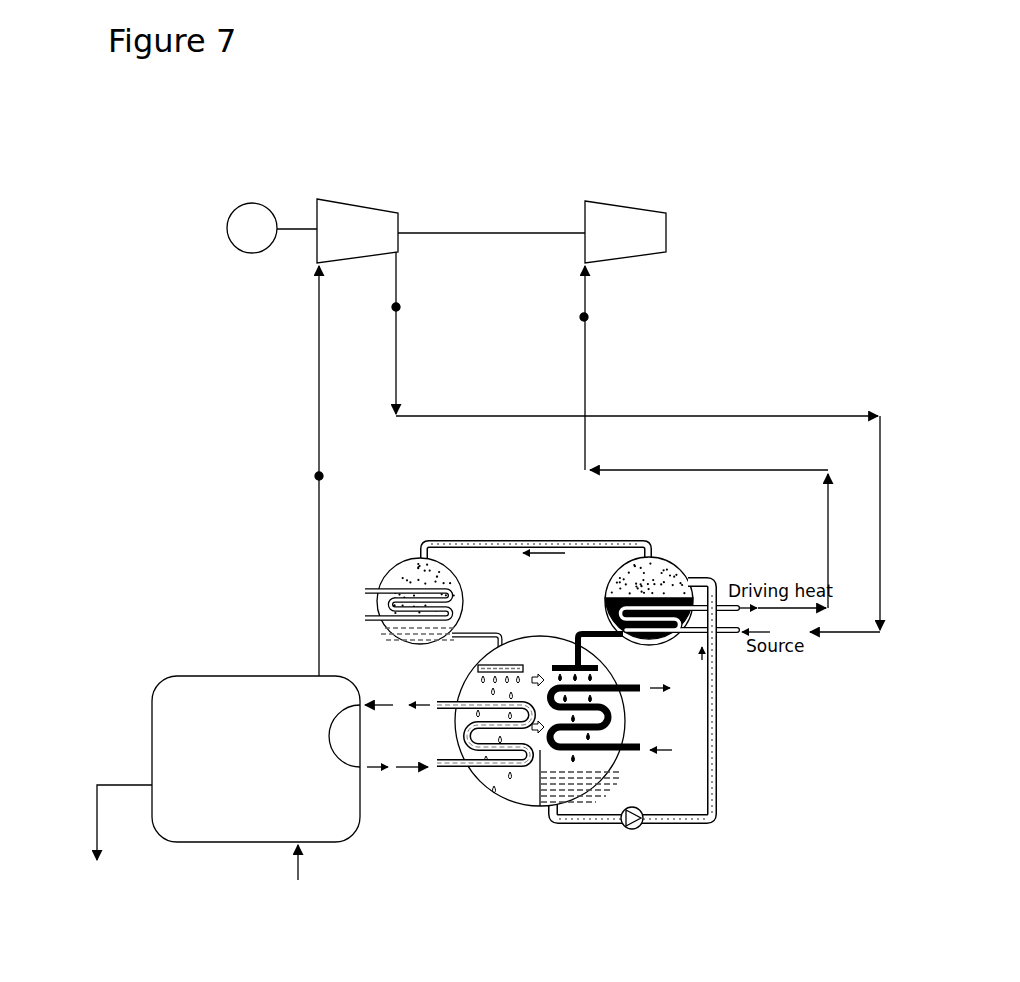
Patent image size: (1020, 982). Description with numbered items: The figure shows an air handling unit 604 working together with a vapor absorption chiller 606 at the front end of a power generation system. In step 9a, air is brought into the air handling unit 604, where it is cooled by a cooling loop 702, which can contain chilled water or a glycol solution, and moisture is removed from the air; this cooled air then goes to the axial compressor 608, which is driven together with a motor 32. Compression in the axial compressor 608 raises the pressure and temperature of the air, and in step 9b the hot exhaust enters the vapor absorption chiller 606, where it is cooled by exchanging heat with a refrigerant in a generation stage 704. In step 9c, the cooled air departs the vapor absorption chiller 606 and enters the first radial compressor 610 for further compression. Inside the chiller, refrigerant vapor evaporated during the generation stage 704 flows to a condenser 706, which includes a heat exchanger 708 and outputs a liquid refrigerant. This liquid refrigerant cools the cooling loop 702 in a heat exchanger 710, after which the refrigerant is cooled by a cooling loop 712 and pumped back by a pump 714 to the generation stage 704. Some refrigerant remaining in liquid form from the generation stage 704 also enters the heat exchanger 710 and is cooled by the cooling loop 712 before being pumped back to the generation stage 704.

The motor 32 is at (250, 203).
The axial compressor 608 is at (353, 200).
The first radial compressor 610 is at (620, 201).
The step of bringing air into the air handling unit 9a is at (306, 471).
The step of exhausting air from the axial compressor 9b is at (624, 442).
The step of cooled air departing the chiller 9c is at (704, 437).
The vapor absorption chiller 606 is at (474, 497).
The air handling unit 604 is at (158, 680).
The cooling loop 702 is at (377, 768).
The generation stage 704 is at (672, 561).
The condenser 706 is at (433, 613).
The heat exchanger 708 is at (372, 622).
The heat exchanger 710 is at (531, 754).
The cooling loop 712 is at (637, 742).
The pump 714 is at (629, 830).